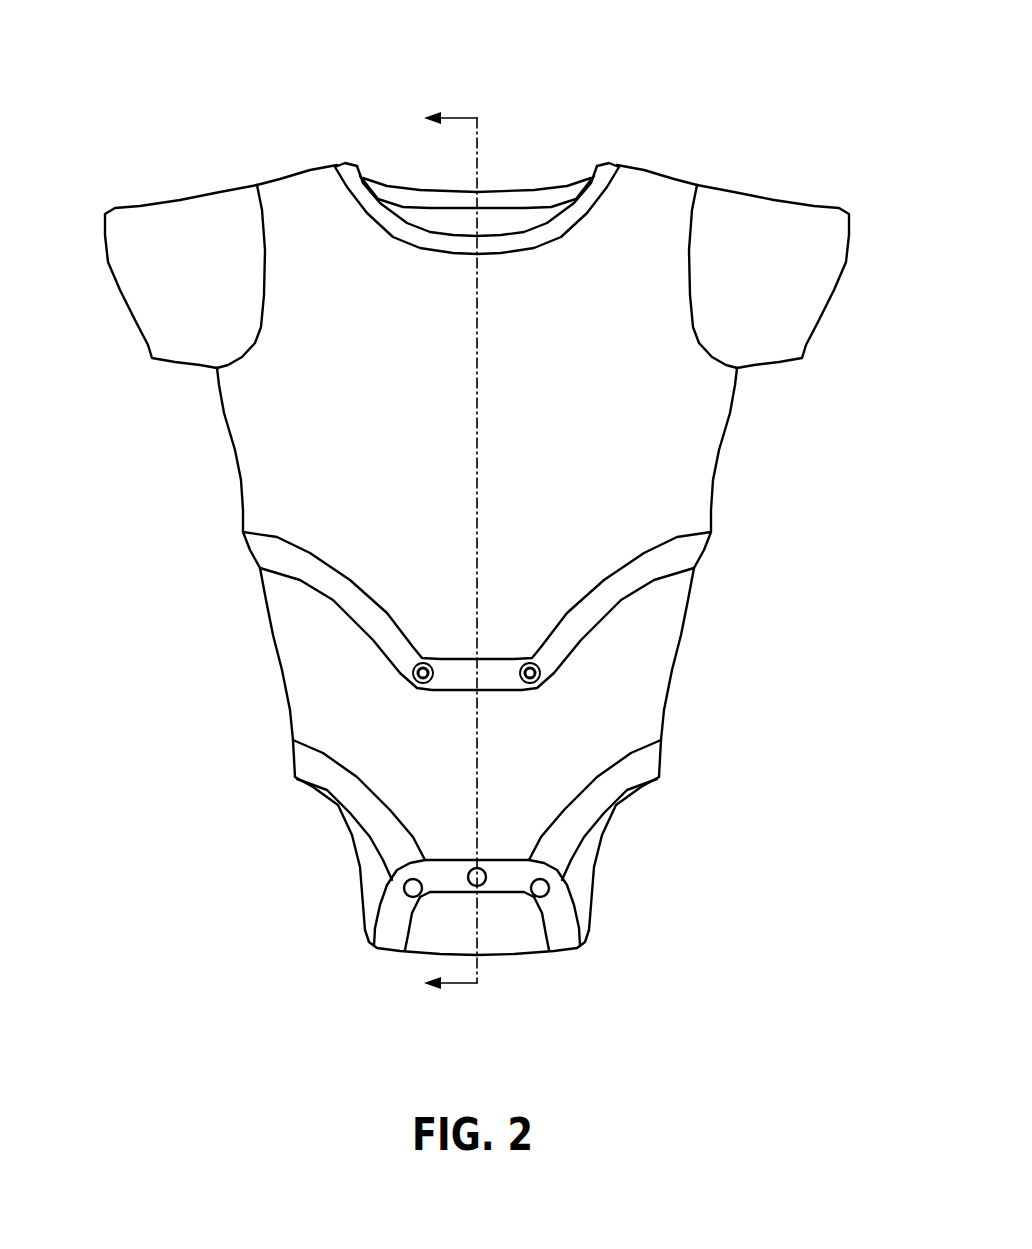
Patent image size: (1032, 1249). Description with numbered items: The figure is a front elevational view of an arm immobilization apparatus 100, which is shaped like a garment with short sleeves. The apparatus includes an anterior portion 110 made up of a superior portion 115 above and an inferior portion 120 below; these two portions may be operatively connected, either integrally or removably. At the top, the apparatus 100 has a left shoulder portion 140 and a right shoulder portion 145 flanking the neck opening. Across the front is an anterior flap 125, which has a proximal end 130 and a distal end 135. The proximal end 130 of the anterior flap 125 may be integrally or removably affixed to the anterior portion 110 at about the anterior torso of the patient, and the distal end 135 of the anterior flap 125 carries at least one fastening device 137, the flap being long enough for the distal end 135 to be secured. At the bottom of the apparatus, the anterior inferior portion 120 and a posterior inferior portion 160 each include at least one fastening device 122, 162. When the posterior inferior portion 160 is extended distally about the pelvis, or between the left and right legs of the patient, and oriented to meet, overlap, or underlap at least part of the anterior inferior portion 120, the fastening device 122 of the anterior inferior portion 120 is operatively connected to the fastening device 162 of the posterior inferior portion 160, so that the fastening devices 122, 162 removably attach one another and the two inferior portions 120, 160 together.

The arm immobilization apparatus 100 is at (170, 116).
The anterior portion 110 is at (192, 503).
The superior portion 115 is at (335, 343).
The inferior portion 120 is at (417, 790).
The fastening device 122 is at (548, 882).
The anterior flap 125 is at (430, 592).
The proximal end 130 is at (535, 532).
The distal end 135 is at (472, 678).
The fastening device 137 is at (543, 680).
The left shoulder portion 140 is at (650, 165).
The right shoulder portion 145 is at (311, 165).
The posterior inferior portion 160 is at (510, 930).
The fastening device 162 is at (476, 882).